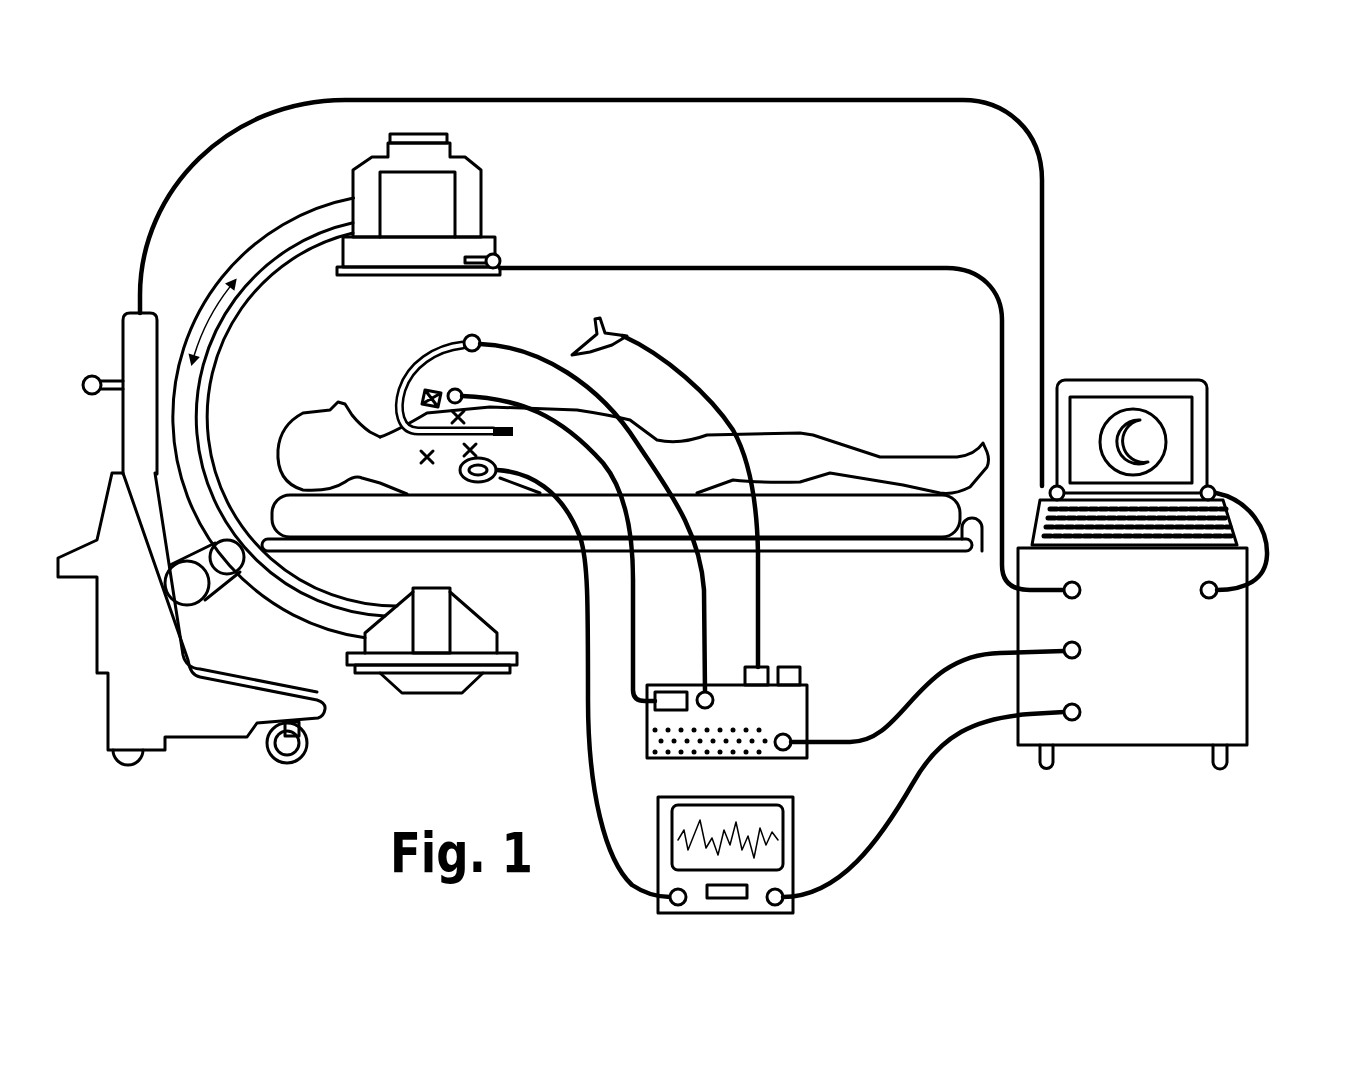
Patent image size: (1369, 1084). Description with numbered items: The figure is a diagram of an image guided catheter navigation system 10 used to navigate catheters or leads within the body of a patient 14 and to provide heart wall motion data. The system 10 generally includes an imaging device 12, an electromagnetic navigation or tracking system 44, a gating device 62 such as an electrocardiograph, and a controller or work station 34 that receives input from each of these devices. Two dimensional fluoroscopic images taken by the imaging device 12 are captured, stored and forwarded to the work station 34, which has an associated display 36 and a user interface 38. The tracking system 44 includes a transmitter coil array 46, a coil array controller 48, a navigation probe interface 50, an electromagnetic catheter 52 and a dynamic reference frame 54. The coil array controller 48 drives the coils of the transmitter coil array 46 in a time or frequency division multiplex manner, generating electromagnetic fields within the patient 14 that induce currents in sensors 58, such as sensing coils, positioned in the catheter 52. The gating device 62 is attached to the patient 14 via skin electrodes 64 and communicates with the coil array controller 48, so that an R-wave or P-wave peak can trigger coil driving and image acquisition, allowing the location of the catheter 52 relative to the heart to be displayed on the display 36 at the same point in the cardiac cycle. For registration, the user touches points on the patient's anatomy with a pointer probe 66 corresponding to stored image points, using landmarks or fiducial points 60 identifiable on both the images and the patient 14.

The image guided catheter navigation system 10 is at (1087, 120).
The imaging device 12 is at (521, 214).
The patient 14 is at (272, 456).
The controller or work station 34 is at (1150, 380).
The display 36 is at (1172, 458).
The user interface 38 is at (1330, 577).
The electromagnetic navigation or tracking system 44 is at (689, 353).
The transmitter coil array 46 is at (500, 274).
The coil array controller 48 is at (1127, 745).
The navigation probe interface 50 is at (808, 706).
The electromagnetic catheter 52 is at (410, 357).
The dynamic reference frame 54 is at (425, 398).
The sensors 58 is at (515, 431).
The landmarks or fiducial points 60 is at (428, 465).
The gating device (electrocardiograph) 62 is at (737, 913).
The skin electrodes 64 is at (470, 490).
The pointer probe 66 is at (600, 352).